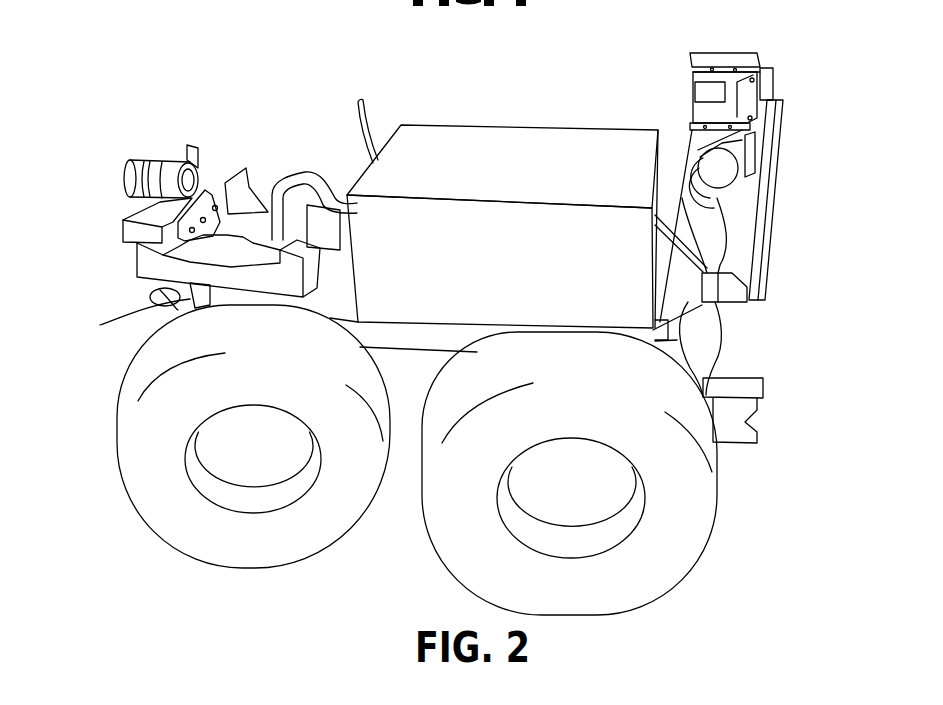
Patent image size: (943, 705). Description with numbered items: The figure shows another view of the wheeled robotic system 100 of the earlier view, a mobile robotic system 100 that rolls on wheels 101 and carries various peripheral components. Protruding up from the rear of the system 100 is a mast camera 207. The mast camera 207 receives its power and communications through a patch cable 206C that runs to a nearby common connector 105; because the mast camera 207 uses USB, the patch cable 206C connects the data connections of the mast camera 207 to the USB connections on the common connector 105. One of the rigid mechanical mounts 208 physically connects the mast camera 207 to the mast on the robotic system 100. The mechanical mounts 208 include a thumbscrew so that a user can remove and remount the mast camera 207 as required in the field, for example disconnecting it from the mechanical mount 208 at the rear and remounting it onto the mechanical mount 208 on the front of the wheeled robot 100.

The mobile robotic system 100 is at (205, 84).
The wheels 101 is at (635, 603).
The common connector 105 is at (655, 205).
The patch cable 206C is at (678, 228).
The mast camera 207 is at (730, 60).
The rigid mechanical mounts 208 is at (202, 273).